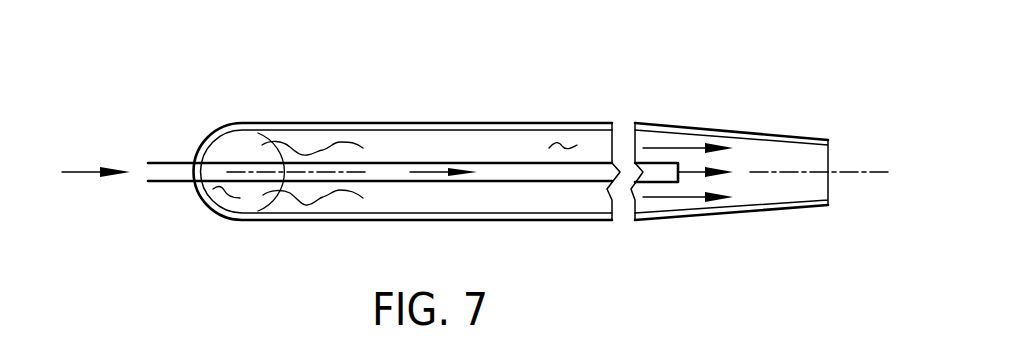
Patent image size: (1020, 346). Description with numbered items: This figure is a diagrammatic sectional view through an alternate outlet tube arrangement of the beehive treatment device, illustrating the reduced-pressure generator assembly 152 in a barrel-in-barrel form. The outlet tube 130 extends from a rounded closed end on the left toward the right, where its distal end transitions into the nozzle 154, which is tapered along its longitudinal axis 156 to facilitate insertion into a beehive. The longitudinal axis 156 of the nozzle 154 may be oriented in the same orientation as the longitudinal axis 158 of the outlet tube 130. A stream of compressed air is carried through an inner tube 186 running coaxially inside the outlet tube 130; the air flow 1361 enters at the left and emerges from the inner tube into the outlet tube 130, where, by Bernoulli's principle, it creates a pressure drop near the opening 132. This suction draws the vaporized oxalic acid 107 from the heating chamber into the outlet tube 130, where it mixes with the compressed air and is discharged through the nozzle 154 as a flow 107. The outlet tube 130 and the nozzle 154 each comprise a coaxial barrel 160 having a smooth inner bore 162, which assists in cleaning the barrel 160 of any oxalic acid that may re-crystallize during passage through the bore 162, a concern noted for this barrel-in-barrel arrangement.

The vaporized oxalic acid 107 is at (308, 155).
The outlet tube 130 is at (662, 43).
The opening 132 is at (223, 198).
The reduced-pressure generator assembly 152 is at (212, 253).
The nozzle 154 is at (782, 205).
The longitudinal axis of nozzle 156 is at (773, 172).
The longitudinal axis of outlet tube 158 is at (248, 172).
The coaxial barrel 160 is at (430, 200).
The smooth inner bore 162 is at (557, 143).
The inner shaft 186 is at (510, 162).
The flow direction 1361 is at (79, 172).